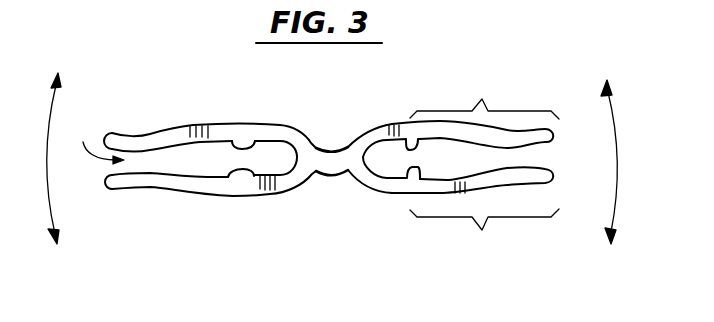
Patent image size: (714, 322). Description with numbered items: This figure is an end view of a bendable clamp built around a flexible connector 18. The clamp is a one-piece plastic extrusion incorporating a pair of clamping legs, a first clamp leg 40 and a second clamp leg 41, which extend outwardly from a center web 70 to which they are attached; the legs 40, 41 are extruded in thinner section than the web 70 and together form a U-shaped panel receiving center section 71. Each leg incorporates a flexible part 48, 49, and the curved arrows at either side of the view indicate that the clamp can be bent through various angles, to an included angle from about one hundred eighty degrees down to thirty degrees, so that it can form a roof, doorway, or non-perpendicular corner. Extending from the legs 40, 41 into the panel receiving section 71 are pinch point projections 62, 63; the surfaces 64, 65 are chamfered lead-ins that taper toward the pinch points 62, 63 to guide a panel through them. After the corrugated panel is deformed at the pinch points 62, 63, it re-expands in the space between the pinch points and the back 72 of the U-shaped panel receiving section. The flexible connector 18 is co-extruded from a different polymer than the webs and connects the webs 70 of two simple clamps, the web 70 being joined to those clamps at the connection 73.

The flexible connector 18 is at (381, 123).
The first clamp leg 40 is at (172, 127).
The second clamp leg 41 is at (185, 194).
The flexible part 48 is at (482, 99).
The flexible part 49 is at (482, 230).
The pinch point projection 62 is at (250, 148).
The pinch point projection 63 is at (253, 176).
The chamfered lead in surface 64 is at (232, 140).
The chamfered lead in surface 65 is at (228, 177).
The center web 70 is at (362, 152).
The U-shaped panel receiving center section 71 is at (93, 142).
The back of the U-shaped panel receiving section 72 is at (283, 158).
The web connection 73 is at (325, 146).